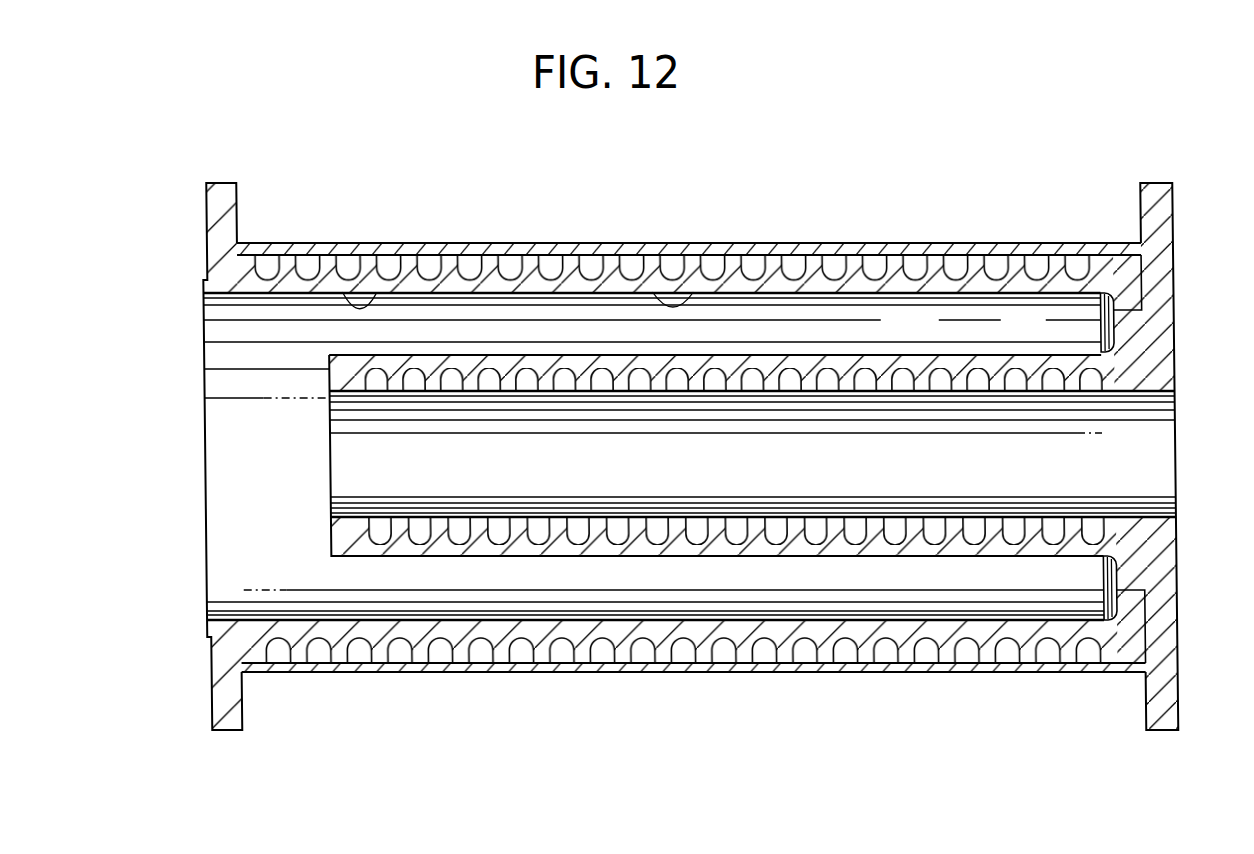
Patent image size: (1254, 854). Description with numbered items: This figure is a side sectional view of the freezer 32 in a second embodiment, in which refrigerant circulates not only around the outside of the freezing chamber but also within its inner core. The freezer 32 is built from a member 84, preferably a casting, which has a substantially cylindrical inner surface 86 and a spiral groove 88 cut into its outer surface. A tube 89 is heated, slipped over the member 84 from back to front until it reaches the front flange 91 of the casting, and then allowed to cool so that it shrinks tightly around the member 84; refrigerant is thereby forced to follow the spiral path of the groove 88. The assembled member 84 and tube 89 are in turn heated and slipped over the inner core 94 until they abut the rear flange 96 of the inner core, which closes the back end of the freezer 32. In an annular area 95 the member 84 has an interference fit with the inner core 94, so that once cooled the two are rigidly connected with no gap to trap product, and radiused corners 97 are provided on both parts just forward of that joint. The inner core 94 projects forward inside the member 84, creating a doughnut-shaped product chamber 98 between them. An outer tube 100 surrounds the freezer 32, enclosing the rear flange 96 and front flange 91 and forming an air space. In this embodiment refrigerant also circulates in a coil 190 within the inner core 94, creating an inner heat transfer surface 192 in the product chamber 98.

The freezer 32 is at (864, 214).
The member 84 is at (237, 205).
The cylindrical inner surface 86 is at (377, 297).
The spiral groove 88 is at (630, 257).
The tube 89 is at (923, 247).
The front flange 91 is at (208, 208).
The inner core 94 is at (328, 370).
The annular area 95 is at (1130, 300).
The rear flange 96 is at (1158, 192).
The radiused corners 97 is at (1100, 345).
The product chamber 98 is at (693, 292).
The outer tube 100 is at (565, 245).
The coil 190 is at (1045, 393).
The inner heat transfer surface 192 is at (840, 352).